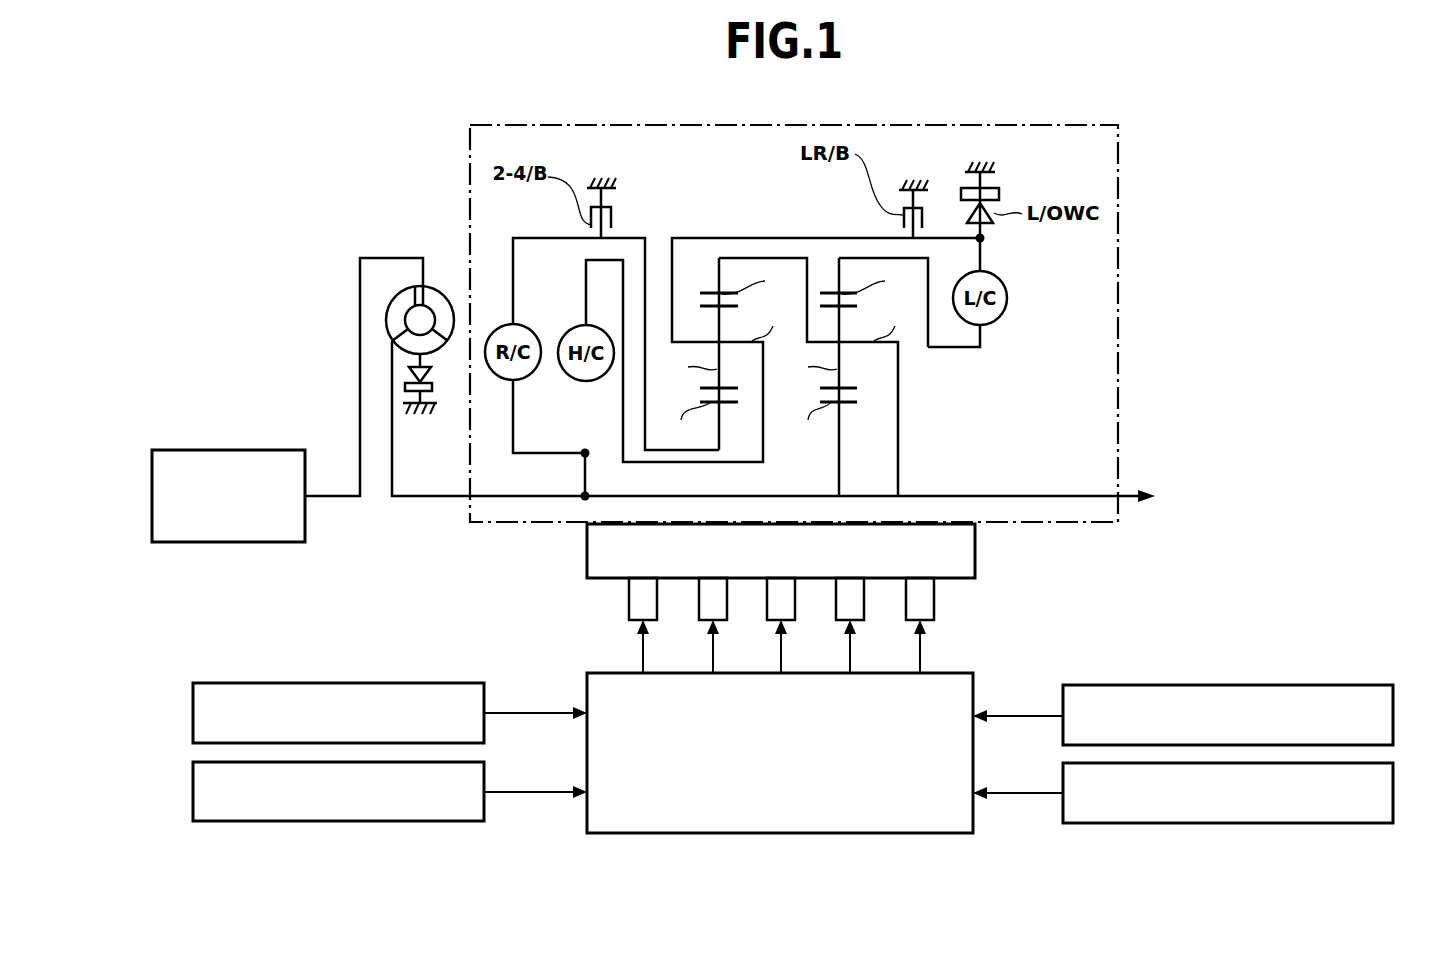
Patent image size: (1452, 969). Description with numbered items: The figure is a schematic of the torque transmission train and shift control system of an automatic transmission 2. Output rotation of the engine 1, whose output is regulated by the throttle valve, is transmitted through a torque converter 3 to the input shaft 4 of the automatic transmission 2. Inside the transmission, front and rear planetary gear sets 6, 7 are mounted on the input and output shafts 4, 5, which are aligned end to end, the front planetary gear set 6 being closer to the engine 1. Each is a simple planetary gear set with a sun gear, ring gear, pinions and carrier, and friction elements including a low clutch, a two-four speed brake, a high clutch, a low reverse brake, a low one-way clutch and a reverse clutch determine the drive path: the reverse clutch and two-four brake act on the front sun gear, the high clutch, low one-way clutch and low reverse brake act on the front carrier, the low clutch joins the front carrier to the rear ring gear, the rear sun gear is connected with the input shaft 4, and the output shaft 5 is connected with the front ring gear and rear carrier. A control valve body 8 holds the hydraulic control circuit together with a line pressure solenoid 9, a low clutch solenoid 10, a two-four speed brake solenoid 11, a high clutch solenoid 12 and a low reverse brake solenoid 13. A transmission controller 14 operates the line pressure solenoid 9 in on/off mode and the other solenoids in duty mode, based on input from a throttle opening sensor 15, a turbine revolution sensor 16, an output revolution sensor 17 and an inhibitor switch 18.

The engine 1 is at (205, 450).
The automatic transmission 2 is at (1132, 170).
The torque converter 3 is at (430, 272).
The input shaft 4 is at (428, 498).
The output shaft 5 is at (1012, 495).
The front planetary gear set 6 is at (695, 254).
The rear planetary gear set 7 is at (814, 254).
The control valve body 8 is at (977, 554).
The line pressure solenoid 9 is at (628, 600).
The low clutch solenoid 10 is at (698, 600).
The 2-4 speed brake solenoid 11 is at (766, 600).
The high clutch solenoid 12 is at (835, 600).
The low reverse brake solenoid 13 is at (905, 600).
The transmission controller 14 is at (940, 673).
The throttle opening sensor 15 is at (192, 712).
The turbine revolution sensor 16 is at (192, 794).
The output revolution sensor 17 is at (1394, 715).
The inhibitor switch 18 is at (1394, 793).